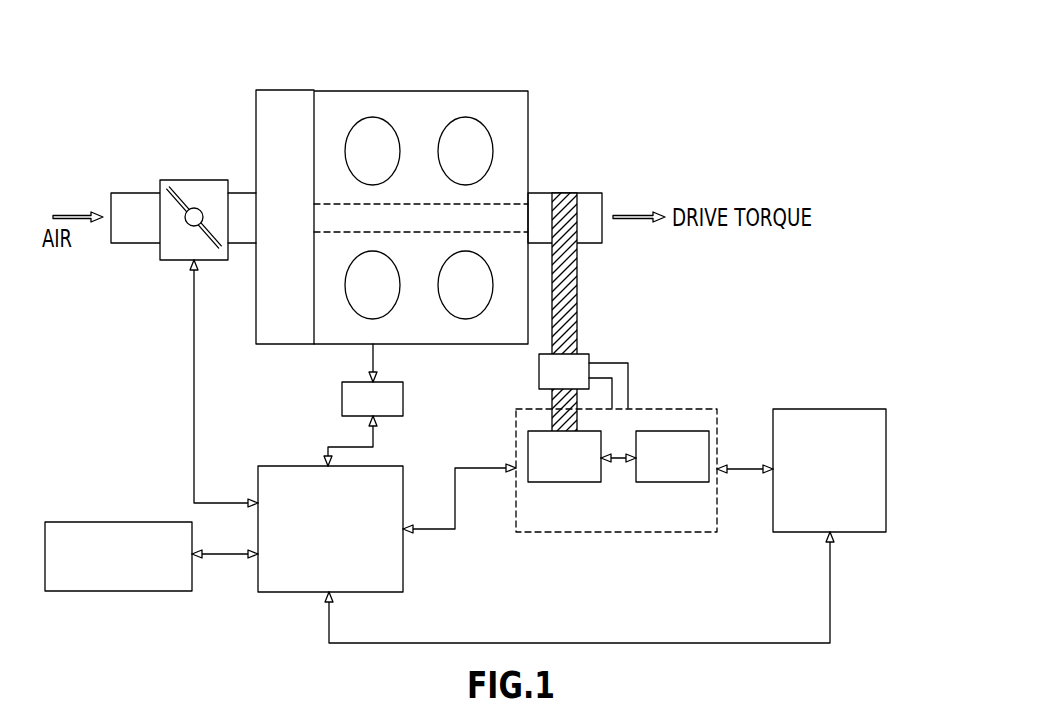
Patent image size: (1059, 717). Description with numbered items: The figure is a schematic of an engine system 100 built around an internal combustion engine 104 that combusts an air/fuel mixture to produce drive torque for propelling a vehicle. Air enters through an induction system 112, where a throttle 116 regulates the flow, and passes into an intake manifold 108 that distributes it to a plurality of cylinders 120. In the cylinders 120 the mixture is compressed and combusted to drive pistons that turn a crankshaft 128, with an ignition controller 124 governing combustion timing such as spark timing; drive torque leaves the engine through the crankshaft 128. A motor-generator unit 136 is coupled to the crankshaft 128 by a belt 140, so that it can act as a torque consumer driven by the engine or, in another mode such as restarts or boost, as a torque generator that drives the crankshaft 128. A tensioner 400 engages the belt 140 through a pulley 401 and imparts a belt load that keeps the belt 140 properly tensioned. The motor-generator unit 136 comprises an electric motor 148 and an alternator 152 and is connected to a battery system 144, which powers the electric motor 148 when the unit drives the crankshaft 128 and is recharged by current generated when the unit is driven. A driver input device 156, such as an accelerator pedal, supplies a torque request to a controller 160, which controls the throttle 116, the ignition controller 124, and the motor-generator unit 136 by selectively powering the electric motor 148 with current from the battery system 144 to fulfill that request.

The engine system 100 is at (637, 93).
The internal combustion engine 104 is at (419, 196).
The intake manifold 108 is at (283, 90).
The induction system 112 is at (128, 193).
The throttle 116 is at (183, 180).
The cylinders 120 is at (373, 113).
The ignition controller 124 is at (403, 392).
The crankshaft 128 is at (435, 214).
The motor-generator unit 136 is at (621, 476).
The belt 140 is at (577, 315).
The battery system 144 is at (867, 409).
The electric motor 148 is at (565, 482).
The alternator 152 is at (672, 431).
The driver input device 156 is at (107, 522).
The controller 160 is at (298, 466).
The tensioner 400 is at (628, 388).
The pulley 401 is at (539, 373).